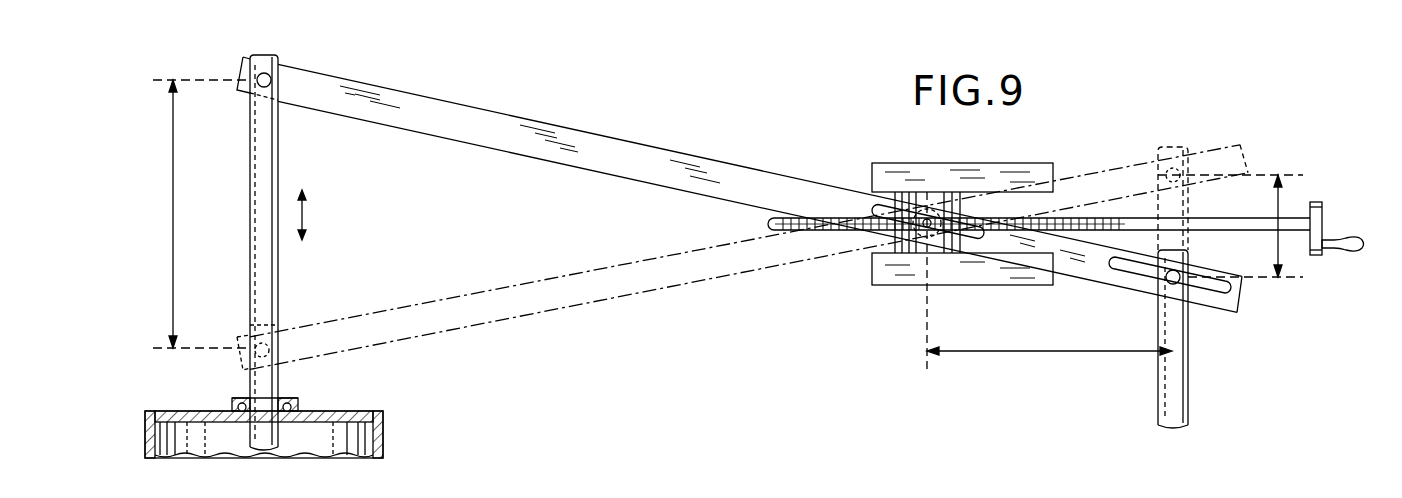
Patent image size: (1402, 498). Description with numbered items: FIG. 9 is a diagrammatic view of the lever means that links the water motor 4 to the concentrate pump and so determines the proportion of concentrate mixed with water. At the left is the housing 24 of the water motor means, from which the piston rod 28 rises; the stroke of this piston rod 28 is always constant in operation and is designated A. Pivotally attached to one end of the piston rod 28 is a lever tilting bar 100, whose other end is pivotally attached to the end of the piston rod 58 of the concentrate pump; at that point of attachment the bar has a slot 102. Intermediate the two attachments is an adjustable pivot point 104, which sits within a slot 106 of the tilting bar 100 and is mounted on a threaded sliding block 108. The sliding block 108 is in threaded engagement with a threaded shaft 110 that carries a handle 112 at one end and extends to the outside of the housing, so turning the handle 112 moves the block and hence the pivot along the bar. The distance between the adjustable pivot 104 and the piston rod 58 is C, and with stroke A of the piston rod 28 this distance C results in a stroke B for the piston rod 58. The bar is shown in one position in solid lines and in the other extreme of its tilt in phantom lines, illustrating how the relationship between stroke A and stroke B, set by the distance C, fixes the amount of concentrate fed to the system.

The water motor 4 is at (384, 439).
The housing 24 is at (145, 435).
The piston rod 28 is at (270, 158).
The piston rod 58 is at (1177, 387).
The lever tilting bar 100 is at (597, 147).
The slot 102 is at (1227, 287).
The adjustable pivot point 104 is at (925, 228).
The slot 106 is at (877, 210).
The threaded sliding block 108 is at (940, 250).
The threaded shaft 110 is at (768, 222).
The handle 112 is at (1318, 213).
The stroke of piston rod 28 A is at (173, 213).
The stroke of piston rod 58 B is at (1280, 208).
The distance between adjustable pivot and piston rod 58 C is at (1052, 353).